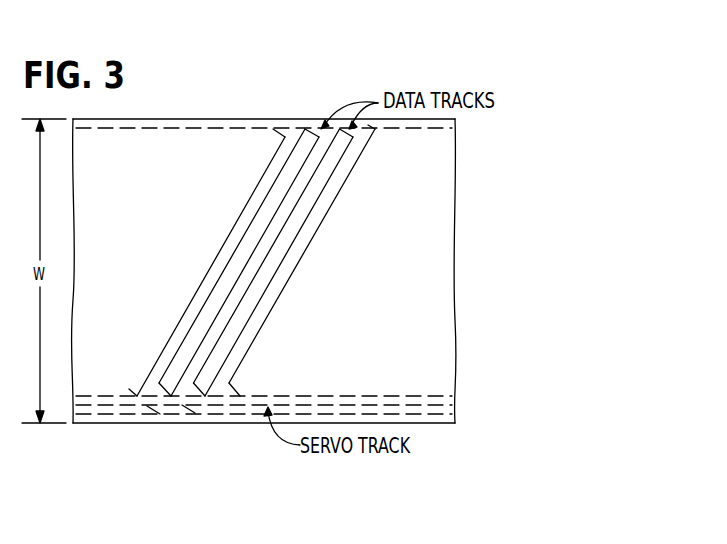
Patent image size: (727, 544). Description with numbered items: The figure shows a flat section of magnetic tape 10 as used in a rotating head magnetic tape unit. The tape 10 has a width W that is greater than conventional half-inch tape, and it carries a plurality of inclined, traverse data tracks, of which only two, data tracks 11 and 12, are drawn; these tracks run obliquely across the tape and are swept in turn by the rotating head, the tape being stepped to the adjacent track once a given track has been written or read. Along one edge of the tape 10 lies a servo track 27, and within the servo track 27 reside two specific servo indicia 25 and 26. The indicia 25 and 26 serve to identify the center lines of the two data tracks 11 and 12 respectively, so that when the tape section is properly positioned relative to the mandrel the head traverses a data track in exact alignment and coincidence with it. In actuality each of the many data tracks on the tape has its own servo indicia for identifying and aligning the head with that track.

The magnetic tape 10 is at (455, 264).
The data track 11 is at (284, 252).
The data track 12 is at (262, 222).
The servo track indicia 25 is at (188, 408).
The servo track indicia 26 is at (157, 410).
The servo track 27 is at (92, 409).